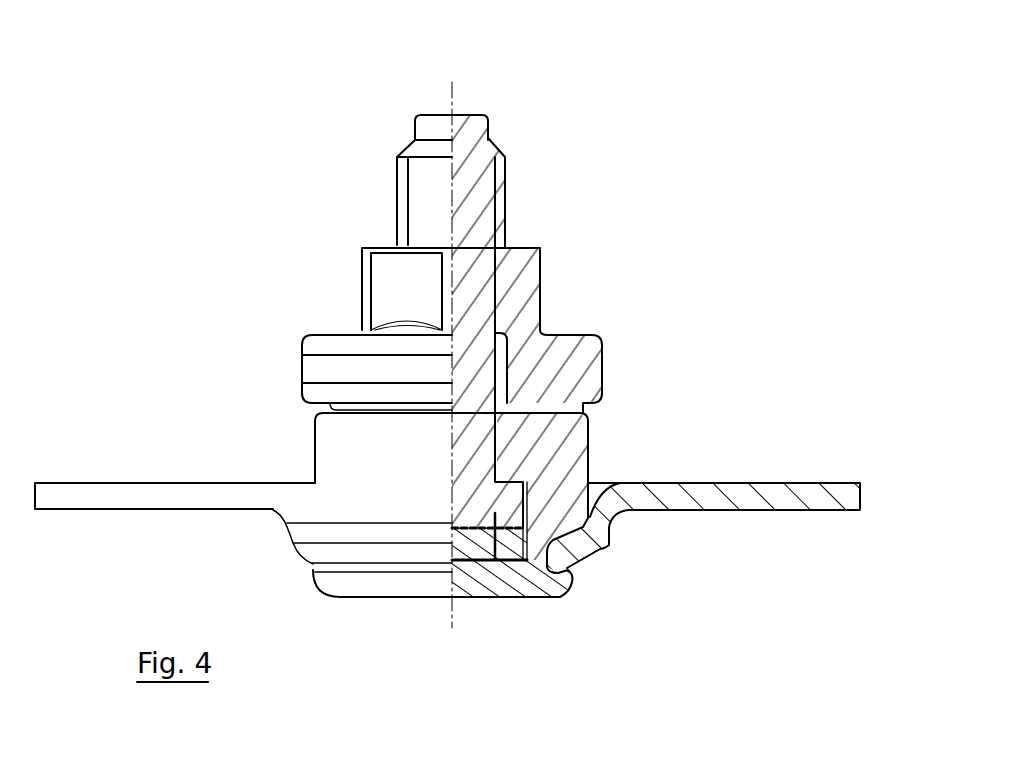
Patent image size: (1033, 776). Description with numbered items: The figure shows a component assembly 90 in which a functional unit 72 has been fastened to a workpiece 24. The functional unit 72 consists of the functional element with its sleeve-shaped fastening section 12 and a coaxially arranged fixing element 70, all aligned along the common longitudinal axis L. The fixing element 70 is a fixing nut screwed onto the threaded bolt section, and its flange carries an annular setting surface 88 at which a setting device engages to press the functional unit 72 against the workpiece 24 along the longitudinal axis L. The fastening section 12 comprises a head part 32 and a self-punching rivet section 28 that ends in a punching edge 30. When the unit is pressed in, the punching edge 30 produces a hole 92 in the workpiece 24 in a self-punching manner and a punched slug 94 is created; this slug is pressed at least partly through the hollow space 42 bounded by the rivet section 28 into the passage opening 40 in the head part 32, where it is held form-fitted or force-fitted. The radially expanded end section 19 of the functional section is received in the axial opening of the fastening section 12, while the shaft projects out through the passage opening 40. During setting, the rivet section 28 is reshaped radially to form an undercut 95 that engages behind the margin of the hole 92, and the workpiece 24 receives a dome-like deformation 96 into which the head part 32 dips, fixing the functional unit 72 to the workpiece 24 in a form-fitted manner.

The longitudinal axis L is at (453, 90).
The component assembly 90 is at (668, 117).
The functional unit 72 is at (277, 188).
The fixing element 70 is at (565, 287).
The setting surface 88 is at (573, 333).
The fastening section 12 is at (466, 542).
The head part 32 is at (590, 435).
The punching edge 30 is at (310, 567).
The hole 92 is at (385, 610).
The punched slug 94 is at (462, 547).
The radially expanded end section 19 is at (495, 513).
The hollow space 42 is at (515, 572).
The passage opening 40 is at (520, 537).
The workpiece 24 is at (447, 504).
The dome-like deformation 96 is at (603, 542).
The rivet section 28 is at (562, 590).
The undercut 95 is at (565, 576).